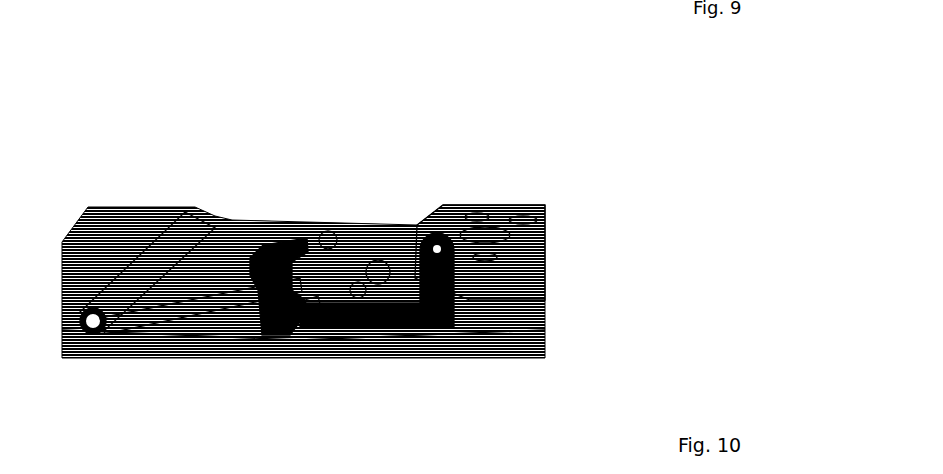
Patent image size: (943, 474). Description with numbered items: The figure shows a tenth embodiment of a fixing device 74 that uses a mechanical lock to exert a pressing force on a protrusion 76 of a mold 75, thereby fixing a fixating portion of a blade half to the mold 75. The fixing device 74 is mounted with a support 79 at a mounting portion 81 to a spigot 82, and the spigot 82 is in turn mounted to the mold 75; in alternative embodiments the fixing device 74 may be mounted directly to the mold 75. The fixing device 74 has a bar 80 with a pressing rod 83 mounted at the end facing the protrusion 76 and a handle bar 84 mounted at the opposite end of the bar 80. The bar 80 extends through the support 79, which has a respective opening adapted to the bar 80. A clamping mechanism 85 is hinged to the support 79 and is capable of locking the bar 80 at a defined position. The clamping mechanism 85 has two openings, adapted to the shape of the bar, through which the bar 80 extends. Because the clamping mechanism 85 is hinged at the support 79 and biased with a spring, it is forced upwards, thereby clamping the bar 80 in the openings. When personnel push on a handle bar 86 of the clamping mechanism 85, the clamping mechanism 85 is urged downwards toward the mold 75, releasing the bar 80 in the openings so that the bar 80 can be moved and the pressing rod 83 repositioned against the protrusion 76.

The fixing device 74 is at (359, 213).
The mold 75 is at (477, 341).
The protrusion 76 is at (105, 218).
The support 79 is at (282, 245).
The bar 80 is at (185, 285).
The mounting portion 81 is at (432, 238).
The spigot 82 is at (508, 208).
The pressing rod 83 is at (118, 290).
The handle bar 84 is at (375, 262).
The clamping mechanism 85 is at (313, 318).
The handle bar 86 is at (329, 232).